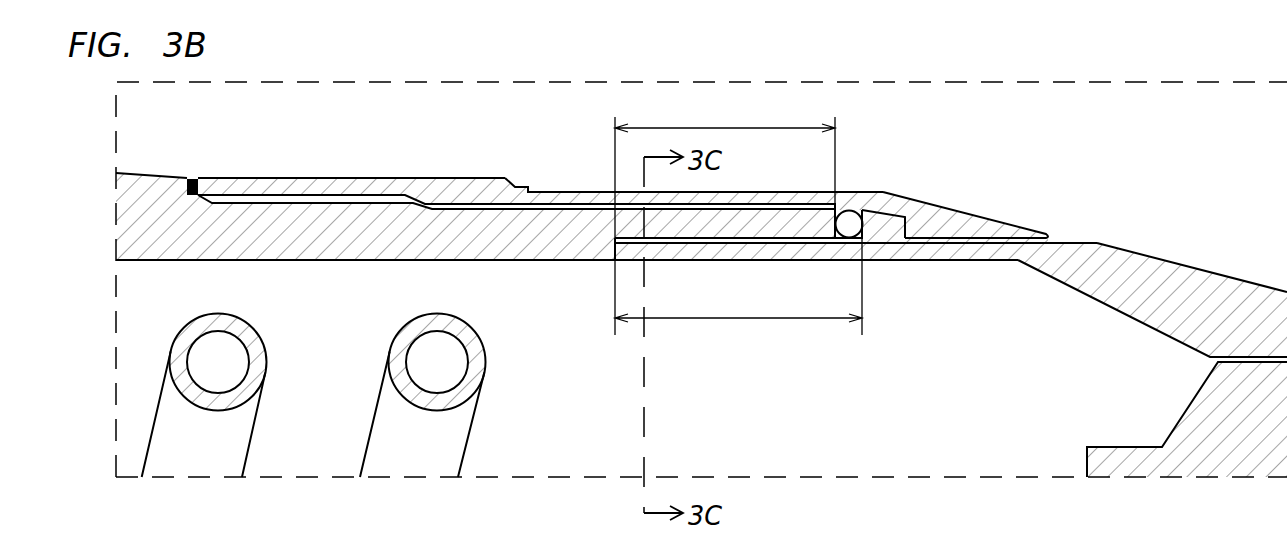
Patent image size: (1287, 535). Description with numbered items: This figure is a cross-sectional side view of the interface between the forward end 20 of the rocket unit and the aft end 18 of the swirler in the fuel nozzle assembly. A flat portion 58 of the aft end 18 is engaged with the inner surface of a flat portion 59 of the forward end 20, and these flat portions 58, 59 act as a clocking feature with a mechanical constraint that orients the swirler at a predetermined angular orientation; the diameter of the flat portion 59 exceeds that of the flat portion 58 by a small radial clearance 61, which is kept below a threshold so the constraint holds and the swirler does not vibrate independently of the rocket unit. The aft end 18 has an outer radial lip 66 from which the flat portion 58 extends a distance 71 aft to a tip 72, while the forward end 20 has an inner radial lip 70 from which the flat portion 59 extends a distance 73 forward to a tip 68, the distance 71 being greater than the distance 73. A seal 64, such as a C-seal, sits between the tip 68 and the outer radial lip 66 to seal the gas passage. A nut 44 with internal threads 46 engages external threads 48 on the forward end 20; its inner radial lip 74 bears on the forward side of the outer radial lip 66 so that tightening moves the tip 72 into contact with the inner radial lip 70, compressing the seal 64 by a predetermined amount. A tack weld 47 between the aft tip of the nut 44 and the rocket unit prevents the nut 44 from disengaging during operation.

The aft end 18 is at (1212, 293).
The forward end 20 is at (143, 192).
The nut 44 is at (455, 188).
The internal threads 46 is at (340, 195).
The tack weld 47 is at (193, 178).
The external threads 48 is at (273, 203).
The flat portion 58 is at (717, 252).
The flat portion 59 is at (722, 222).
The radial clearance 61 is at (776, 240).
The seal 64 is at (849, 222).
The outer radial lip 66 is at (878, 218).
The tip 68 is at (836, 230).
The inner radial lip 70 is at (615, 248).
The distance 71 is at (722, 320).
The tip 72 is at (618, 250).
The distance 73 is at (725, 128).
The inner radial lip 74 is at (955, 222).